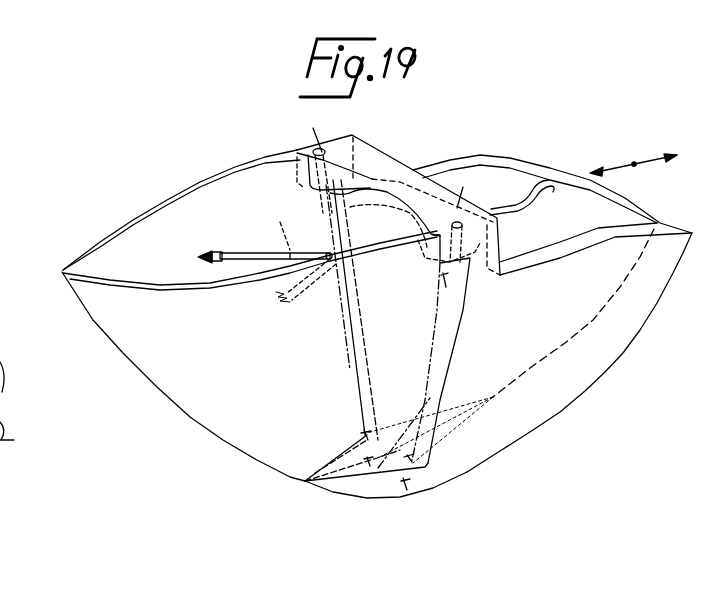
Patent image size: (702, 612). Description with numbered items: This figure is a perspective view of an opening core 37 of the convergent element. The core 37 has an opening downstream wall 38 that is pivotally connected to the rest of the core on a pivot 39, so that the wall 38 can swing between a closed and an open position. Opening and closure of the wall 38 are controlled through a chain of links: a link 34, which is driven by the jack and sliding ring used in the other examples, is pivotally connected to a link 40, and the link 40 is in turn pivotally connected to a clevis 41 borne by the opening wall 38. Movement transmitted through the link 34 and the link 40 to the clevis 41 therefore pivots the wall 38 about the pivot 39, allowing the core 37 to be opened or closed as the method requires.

The link 34 is at (518, 209).
The core 37 is at (598, 327).
The opening downstream wall 38 is at (135, 234).
The pivot 39 is at (365, 489).
The link 40 is at (258, 252).
The clevis 41 is at (213, 252).